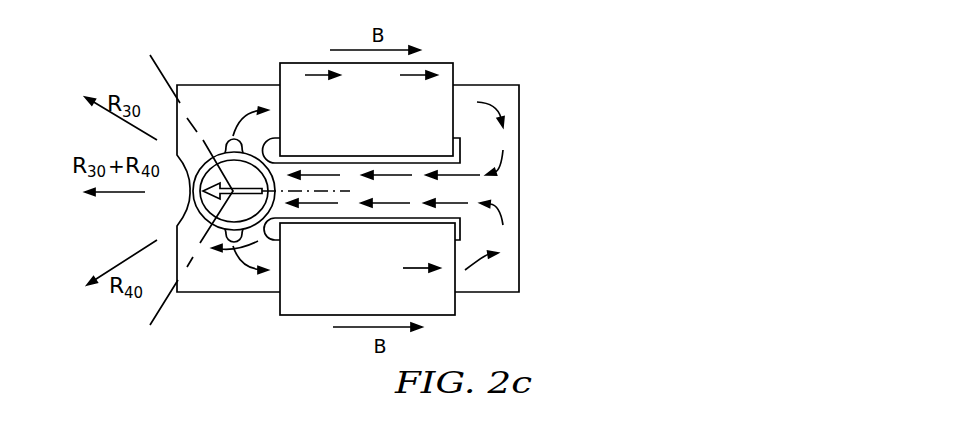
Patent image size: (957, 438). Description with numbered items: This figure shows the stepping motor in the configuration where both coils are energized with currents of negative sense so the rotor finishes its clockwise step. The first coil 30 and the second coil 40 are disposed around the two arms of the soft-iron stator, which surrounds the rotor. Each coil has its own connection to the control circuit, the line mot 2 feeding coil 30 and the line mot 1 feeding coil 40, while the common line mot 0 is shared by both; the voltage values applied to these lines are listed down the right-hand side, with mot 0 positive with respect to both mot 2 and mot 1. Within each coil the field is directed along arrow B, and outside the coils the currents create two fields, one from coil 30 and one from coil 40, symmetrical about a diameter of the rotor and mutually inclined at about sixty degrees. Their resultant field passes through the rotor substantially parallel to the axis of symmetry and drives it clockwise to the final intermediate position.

The first coil 30 is at (378, 136).
The second coil 40 is at (378, 295).
The mot 0 common connection line 0 is at (460, 143).
The mot 1 connection line 1 is at (455, 300).
The mot 2 connection line 2 is at (455, 73).